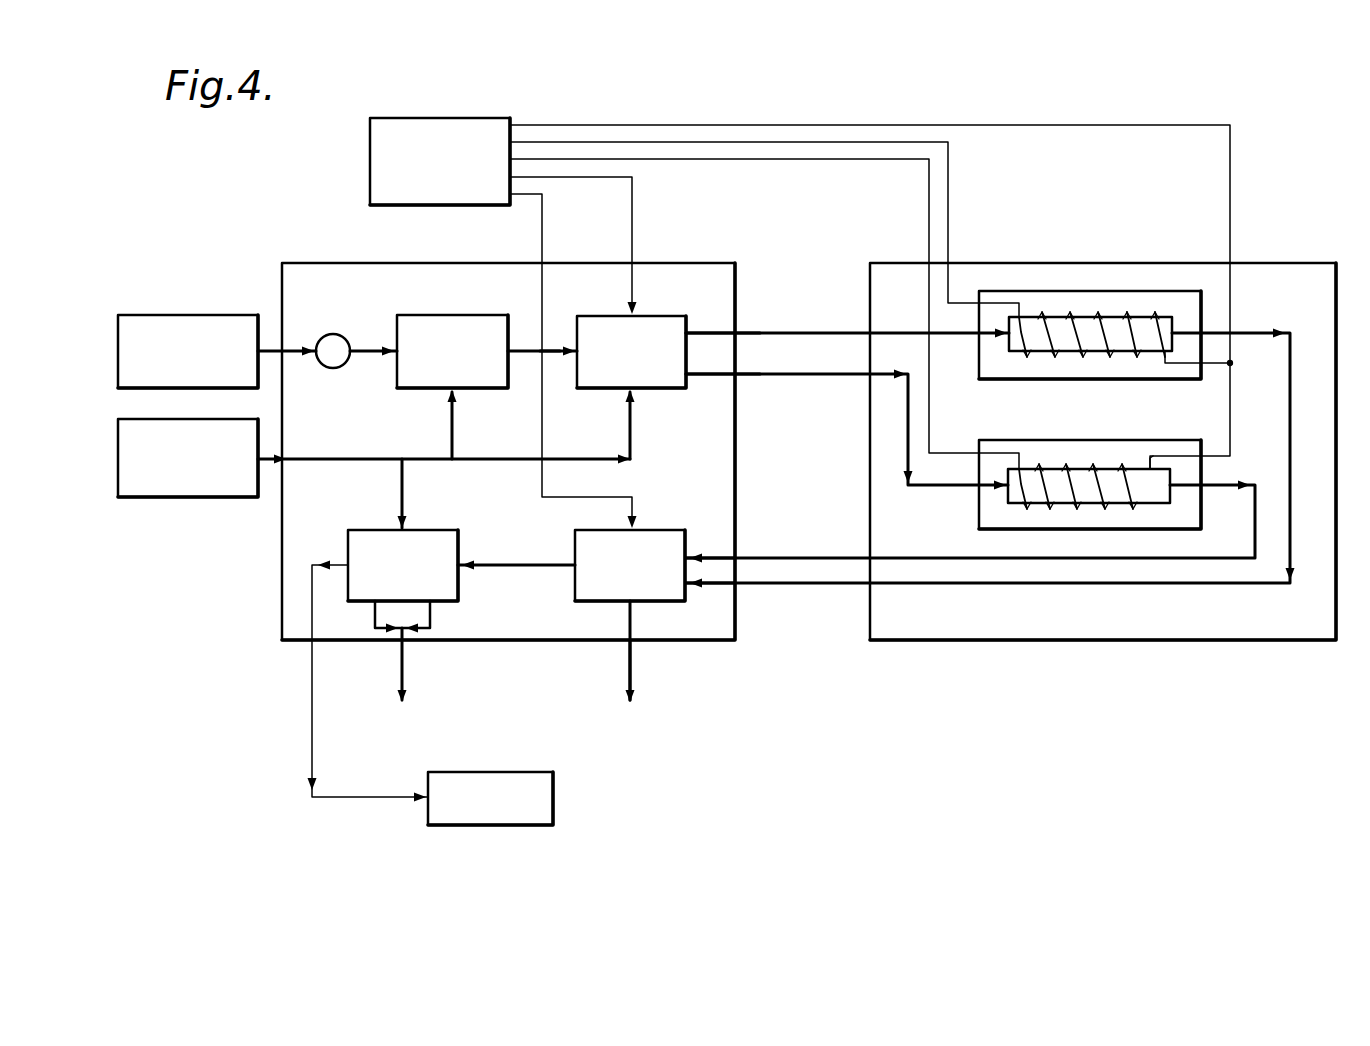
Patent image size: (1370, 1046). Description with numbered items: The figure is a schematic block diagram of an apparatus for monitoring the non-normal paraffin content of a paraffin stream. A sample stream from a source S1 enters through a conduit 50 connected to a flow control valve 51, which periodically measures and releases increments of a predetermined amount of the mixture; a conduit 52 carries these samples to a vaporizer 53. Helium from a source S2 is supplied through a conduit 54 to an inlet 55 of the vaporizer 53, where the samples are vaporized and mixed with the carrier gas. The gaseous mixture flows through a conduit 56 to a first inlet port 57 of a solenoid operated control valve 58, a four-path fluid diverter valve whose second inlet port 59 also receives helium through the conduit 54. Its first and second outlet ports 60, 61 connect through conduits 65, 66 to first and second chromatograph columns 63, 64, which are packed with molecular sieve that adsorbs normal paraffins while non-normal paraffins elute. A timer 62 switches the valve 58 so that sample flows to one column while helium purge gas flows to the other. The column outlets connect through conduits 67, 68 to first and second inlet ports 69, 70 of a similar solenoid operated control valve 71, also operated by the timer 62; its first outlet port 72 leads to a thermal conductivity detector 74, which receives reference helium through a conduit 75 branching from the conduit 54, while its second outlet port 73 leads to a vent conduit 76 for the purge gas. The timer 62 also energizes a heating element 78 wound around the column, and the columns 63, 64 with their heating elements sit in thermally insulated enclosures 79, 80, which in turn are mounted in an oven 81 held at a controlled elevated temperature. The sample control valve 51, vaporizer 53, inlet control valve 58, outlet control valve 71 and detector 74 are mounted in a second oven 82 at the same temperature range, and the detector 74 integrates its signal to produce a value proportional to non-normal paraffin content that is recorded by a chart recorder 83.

The conduit 50 is at (266, 345).
The flow control valve 51 is at (322, 366).
The conduit 52 is at (378, 357).
The vaporizer 53 is at (448, 315).
The conduit 54 is at (312, 458).
The inlet 55 is at (454, 430).
The conduit 56 is at (522, 345).
The first inlet port 57 is at (566, 345).
The solenoid operated control valve 58 is at (656, 316).
The second inlet port 59 is at (637, 400).
The first outlet port 60 is at (690, 333).
The second outlet port 61 is at (690, 373).
The timer 62 is at (447, 118).
The first chromatograph column 63 is at (1112, 322).
The second chromatograph column 64 is at (1073, 470).
The conduit 65 is at (828, 331).
The conduit 66 is at (838, 366).
The conduit 67 is at (1258, 332).
The conduit 68 is at (1228, 485).
The first inlet port 69 is at (690, 585).
The second inlet port 70 is at (692, 556).
The solenoid operated control valve 71 is at (665, 530).
The first outlet port 72 is at (1045, 328).
The second outlet port 73 is at (628, 608).
The thermal conductivity detector 74 is at (440, 530).
The conduit 75 is at (400, 487).
The vent conduit 76 is at (626, 672).
The heating element 78 is at (1098, 478).
The thermally insulated enclosure 79 is at (1168, 291).
The thermally insulated enclosure 80 is at (1172, 441).
The oven 81 is at (1290, 263).
The second oven 82 is at (690, 263).
The chart recorder 83 is at (500, 764).
The source S1 is at (198, 314).
The helium source S2 is at (210, 498).